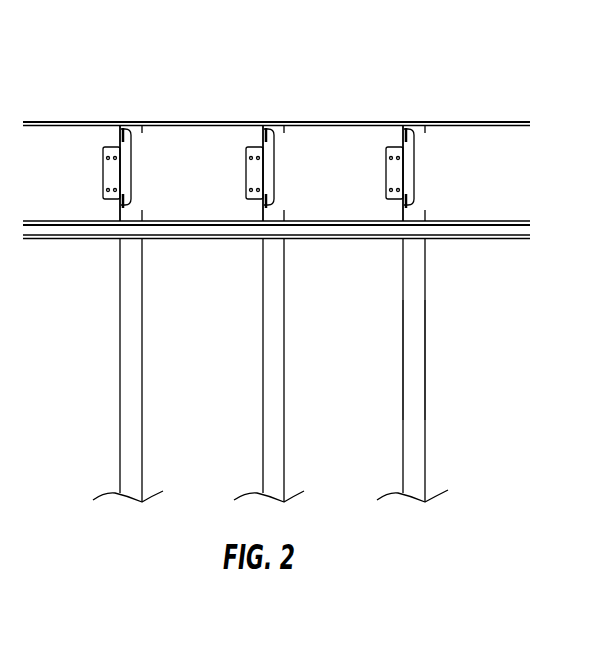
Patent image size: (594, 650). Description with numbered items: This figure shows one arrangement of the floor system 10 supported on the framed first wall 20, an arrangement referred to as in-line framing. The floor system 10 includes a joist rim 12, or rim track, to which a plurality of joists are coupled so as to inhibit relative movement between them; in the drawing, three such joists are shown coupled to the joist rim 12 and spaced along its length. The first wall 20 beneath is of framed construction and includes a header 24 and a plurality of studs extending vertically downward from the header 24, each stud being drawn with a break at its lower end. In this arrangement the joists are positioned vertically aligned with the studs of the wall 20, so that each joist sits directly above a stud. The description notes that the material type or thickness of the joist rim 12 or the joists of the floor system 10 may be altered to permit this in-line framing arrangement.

The floor system 10 is at (500, 122).
The joist rim 12 is at (488, 221).
The first wall 20 is at (427, 355).
The header 24 is at (480, 238).